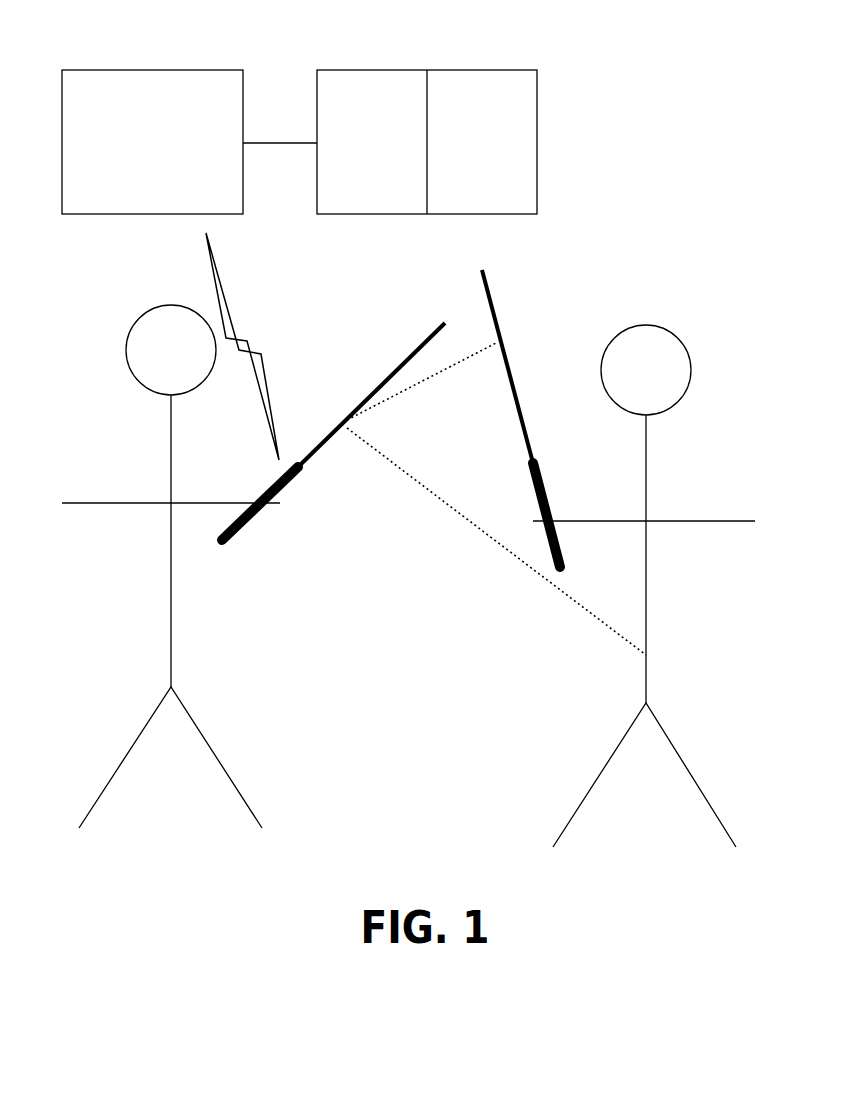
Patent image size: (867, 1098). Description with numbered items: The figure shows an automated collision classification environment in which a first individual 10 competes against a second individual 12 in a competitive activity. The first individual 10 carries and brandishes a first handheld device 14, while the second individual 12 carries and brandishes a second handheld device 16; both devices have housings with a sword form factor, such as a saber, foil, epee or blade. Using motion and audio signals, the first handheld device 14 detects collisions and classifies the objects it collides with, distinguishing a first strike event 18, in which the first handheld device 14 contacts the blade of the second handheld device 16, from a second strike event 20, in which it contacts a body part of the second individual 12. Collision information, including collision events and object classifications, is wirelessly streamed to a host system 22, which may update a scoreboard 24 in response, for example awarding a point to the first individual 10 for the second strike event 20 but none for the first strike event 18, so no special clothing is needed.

The first individual 10 is at (166, 304).
The second individual 12 is at (654, 326).
The first handheld device 14 is at (253, 519).
The second handheld device 16 is at (547, 500).
The first strike event 18 is at (412, 388).
The second strike event 20 is at (577, 607).
The host system 22 is at (133, 70).
The scoreboard 24 is at (427, 70).